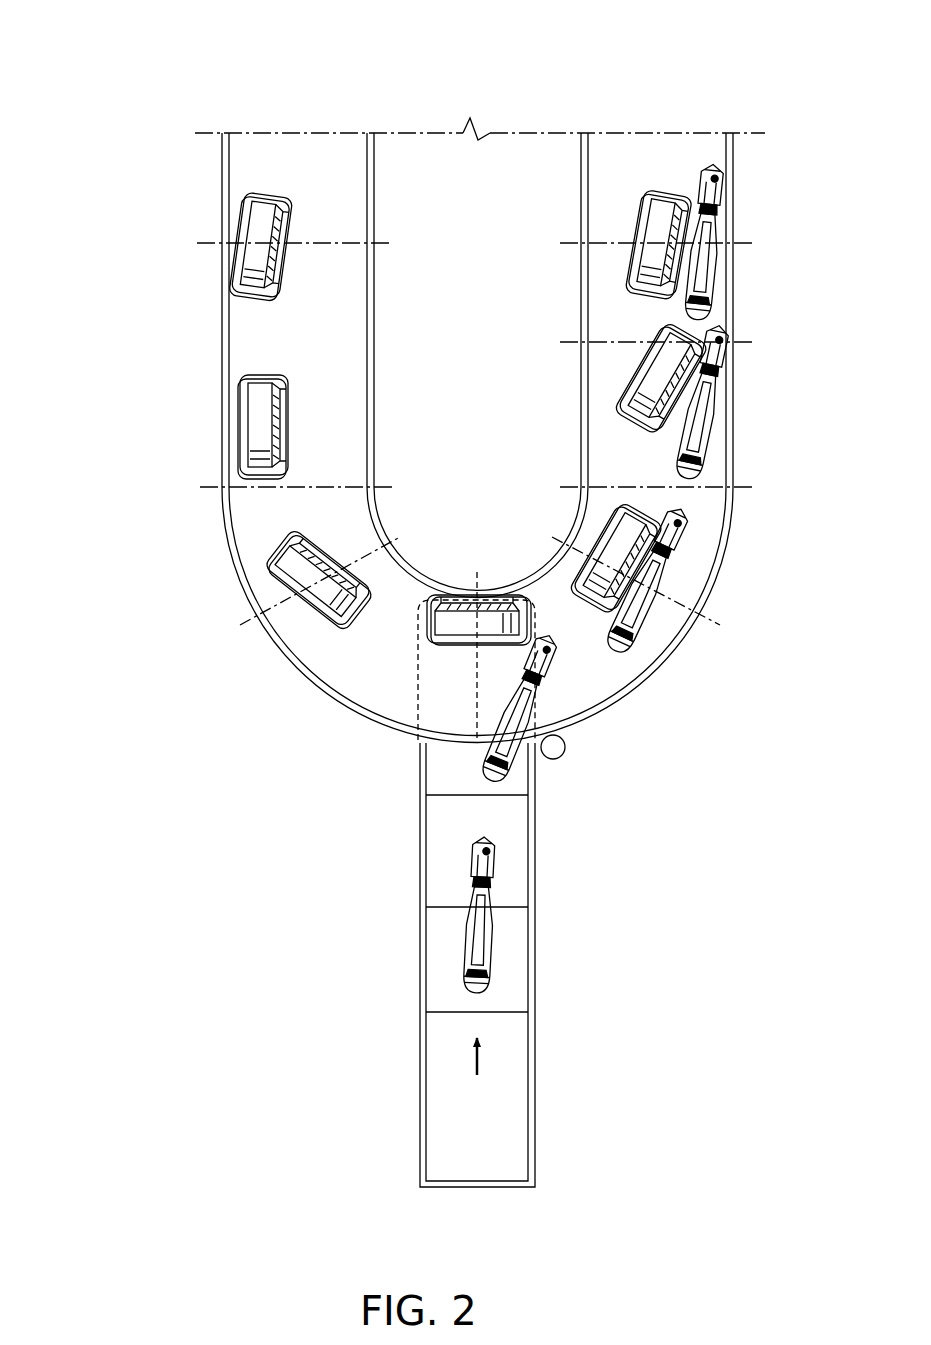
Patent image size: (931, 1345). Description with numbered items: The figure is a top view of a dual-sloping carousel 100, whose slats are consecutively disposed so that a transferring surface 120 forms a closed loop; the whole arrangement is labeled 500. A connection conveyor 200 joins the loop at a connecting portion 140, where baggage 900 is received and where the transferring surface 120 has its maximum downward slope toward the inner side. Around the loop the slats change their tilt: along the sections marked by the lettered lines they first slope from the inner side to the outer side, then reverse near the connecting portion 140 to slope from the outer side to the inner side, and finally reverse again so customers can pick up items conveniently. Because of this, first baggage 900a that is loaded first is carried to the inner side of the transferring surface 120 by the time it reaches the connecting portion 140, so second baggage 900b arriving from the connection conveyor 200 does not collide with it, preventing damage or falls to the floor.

The razor assembly system 500 is at (488, 35).
The carousel 100 is at (214, 334).
The transferring surface 120 is at (343, 370).
The connecting portion 140 is at (417, 693).
The connection conveyor 200 is at (412, 884).
The baggage 900 is at (240, 223).
The first baggage 900a is at (427, 630).
The second baggage 900b is at (545, 680).